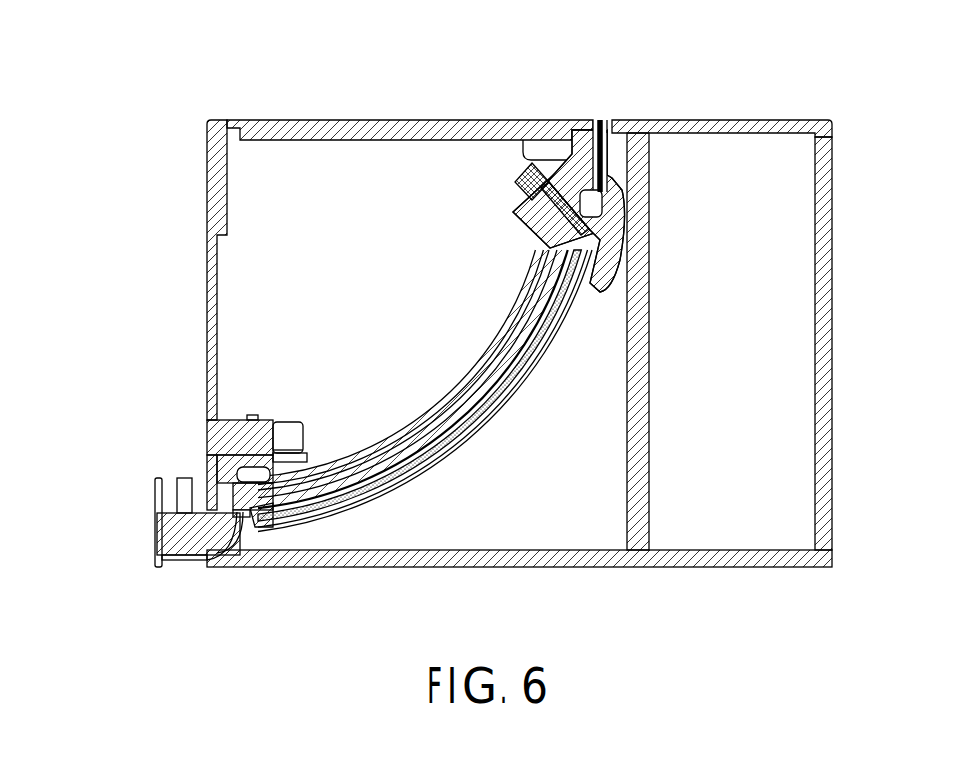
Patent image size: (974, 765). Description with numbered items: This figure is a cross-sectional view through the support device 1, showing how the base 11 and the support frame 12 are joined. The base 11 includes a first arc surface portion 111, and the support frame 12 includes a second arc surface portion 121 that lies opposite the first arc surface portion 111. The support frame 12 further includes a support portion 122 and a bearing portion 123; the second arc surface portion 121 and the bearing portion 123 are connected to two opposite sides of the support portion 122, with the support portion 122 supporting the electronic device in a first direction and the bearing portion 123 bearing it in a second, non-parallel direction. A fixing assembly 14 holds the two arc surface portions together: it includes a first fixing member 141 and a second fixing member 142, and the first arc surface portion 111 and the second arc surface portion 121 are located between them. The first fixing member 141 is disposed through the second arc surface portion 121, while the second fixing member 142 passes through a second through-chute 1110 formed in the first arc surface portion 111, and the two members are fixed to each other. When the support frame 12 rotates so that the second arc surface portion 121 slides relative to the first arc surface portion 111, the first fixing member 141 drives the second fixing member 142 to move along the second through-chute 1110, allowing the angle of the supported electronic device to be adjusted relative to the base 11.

The support device 1 is at (72, 72).
The base 11 is at (871, 320).
The support frame 12 is at (338, 97).
The fixing assembly 14 is at (510, 146).
The first arc surface portion 111 is at (610, 130).
The second arc surface portion 121 is at (587, 130).
The support portion 122 is at (247, 165).
The bearing portion 123 is at (180, 555).
The first fixing member 141 is at (516, 150).
The second fixing member 142 is at (547, 243).
The second through-chute 1110 is at (402, 480).